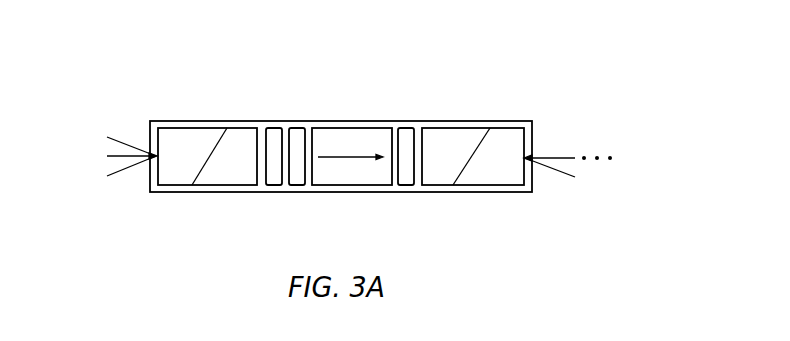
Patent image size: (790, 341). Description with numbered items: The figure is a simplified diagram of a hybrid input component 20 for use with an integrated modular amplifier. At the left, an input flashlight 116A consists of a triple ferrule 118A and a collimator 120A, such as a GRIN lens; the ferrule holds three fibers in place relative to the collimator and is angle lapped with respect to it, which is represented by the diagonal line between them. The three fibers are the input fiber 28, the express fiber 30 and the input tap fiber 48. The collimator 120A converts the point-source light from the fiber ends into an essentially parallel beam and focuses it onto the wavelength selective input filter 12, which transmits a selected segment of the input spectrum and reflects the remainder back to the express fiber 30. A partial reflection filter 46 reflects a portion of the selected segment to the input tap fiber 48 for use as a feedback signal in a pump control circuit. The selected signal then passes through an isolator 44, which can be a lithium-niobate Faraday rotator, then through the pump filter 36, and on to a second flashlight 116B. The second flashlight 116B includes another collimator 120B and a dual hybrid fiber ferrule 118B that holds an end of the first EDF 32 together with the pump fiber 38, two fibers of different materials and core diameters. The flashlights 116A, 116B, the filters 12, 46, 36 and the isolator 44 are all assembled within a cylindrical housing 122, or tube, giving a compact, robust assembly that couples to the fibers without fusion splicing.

The hybrid input component 20 is at (402, 68).
The cylindrical housing 122 is at (352, 121).
The input flashlight 116A is at (192, 115).
The triple ferrule 118A is at (173, 186).
The collimator 120A is at (227, 186).
The wavelength selective input filter 12 is at (275, 128).
The partial reflection filter 46 is at (300, 128).
The isolator 44 is at (355, 186).
The pump filter 36 is at (407, 128).
The second flashlight 116B is at (500, 115).
The dual hybrid fiber ferrule 118B is at (492, 186).
The collimator 120B is at (440, 186).
The input fiber 28 is at (115, 137).
The input tap fiber 48 is at (110, 151).
The express fiber 30 is at (113, 177).
The first EDF 32 is at (565, 153).
The pump fiber 38 is at (565, 175).